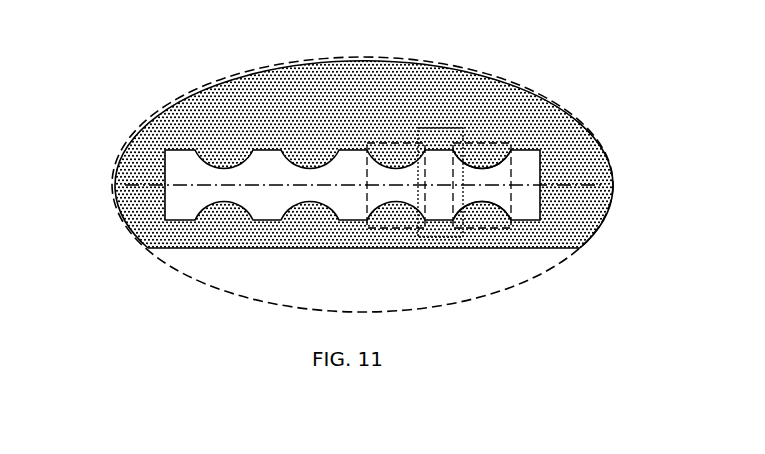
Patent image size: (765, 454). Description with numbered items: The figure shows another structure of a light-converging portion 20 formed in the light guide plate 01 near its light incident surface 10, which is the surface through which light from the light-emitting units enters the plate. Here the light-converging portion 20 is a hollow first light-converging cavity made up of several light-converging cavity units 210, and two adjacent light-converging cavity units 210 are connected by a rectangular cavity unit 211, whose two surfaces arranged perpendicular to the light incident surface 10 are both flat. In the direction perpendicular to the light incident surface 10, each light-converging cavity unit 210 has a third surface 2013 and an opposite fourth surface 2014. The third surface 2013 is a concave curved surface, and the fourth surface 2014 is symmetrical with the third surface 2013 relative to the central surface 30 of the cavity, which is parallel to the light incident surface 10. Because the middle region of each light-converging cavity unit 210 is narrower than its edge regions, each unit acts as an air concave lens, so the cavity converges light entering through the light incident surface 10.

The light guide plate 01 is at (220, 98).
The light incident surface 10 is at (188, 249).
The light-converging portion 20 is at (182, 203).
The central surface 30 is at (570, 183).
The light-converging cavity unit 210 is at (379, 143).
The rectangular cavity unit 211 is at (437, 128).
The third surface 2013 is at (493, 167).
The fourth surface 2014 is at (497, 200).